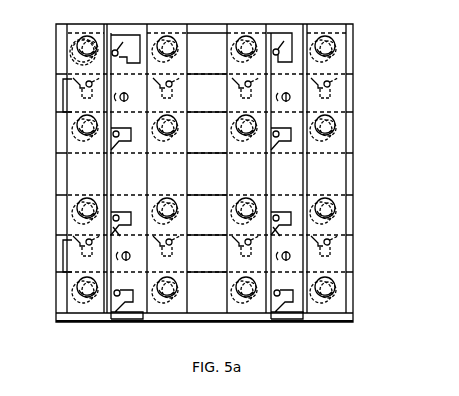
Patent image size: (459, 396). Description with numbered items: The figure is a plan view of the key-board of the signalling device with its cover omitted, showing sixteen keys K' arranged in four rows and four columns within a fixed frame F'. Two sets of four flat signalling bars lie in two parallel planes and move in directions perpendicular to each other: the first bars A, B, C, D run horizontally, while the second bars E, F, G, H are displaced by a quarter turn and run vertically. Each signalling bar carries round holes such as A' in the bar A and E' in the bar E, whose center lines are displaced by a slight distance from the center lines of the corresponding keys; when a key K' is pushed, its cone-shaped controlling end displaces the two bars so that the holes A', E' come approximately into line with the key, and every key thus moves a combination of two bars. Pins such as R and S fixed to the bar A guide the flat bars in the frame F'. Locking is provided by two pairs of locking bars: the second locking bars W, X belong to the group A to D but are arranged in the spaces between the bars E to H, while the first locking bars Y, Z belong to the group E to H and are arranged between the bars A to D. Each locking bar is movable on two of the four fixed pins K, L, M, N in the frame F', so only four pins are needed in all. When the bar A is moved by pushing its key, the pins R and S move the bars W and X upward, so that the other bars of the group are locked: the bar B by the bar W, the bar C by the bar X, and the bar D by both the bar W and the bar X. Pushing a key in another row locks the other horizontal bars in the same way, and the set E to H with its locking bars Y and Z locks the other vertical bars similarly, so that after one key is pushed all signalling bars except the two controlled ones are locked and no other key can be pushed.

The first signalling bar A is at (194, 53).
The round hole in signalling bar A A' is at (193, 85).
The first signalling bar B is at (194, 140).
The first signalling bar C is at (194, 215).
The first signalling bar D is at (194, 287).
The second signalling bar E is at (94, 157).
The round hole in signalling bar E E' is at (87, 37).
The second signalling bar F is at (167, 157).
The fixed frame F' is at (220, 173).
The second signalling bar G is at (246, 157).
The second signalling bar H is at (317, 156).
The second locking bar W is at (121, 163).
The second locking bar X is at (281, 163).
The first locking bar Y is at (58, 95).
The first locking bar Z is at (58, 256).
The key K' is at (197, 153).
The fixed pin K is at (126, 98).
The fixed pin L is at (287, 98).
The fixed pin M is at (127, 284).
The fixed pin N is at (287, 284).
The pin R is at (125, 49).
The pin S is at (279, 47).